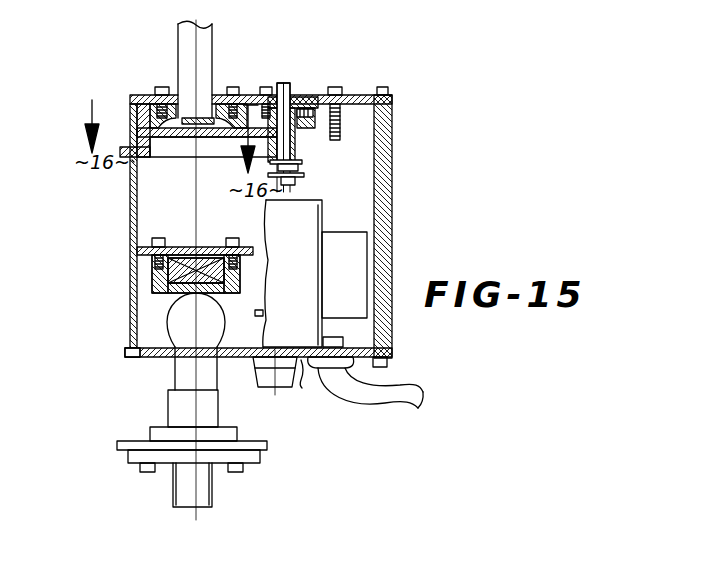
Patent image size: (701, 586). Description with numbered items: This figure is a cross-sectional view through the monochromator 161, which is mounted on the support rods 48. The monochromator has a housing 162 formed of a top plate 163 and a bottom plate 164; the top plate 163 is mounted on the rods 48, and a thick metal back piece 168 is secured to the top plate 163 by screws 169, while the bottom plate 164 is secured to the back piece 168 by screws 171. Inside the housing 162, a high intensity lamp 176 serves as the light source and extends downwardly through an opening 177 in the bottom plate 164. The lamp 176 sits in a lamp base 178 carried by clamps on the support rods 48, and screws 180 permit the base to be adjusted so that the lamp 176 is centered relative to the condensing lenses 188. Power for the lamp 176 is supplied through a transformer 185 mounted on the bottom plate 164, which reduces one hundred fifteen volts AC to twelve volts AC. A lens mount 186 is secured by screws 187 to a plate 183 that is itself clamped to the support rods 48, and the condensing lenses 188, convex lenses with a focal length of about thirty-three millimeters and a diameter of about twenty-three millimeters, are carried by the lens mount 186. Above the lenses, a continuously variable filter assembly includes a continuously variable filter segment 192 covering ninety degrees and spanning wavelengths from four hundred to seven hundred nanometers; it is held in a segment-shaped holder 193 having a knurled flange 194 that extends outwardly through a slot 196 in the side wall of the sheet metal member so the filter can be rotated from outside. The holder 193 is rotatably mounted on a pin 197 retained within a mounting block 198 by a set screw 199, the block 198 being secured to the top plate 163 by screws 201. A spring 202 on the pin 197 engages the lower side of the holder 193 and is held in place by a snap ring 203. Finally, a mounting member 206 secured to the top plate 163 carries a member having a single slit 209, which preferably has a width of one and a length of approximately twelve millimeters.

The support rods 48 is at (214, 52).
The monochromator 161 is at (410, 158).
The housing 162 is at (128, 223).
The top plate 163 is at (348, 96).
The bottom plate 164 is at (289, 308).
The back piece 168 is at (393, 131).
The screws 169 is at (389, 92).
The screws 171 is at (387, 367).
The high intensity lamp 176 is at (172, 327).
The opening 177 is at (158, 357).
The lamp base 178 is at (162, 437).
The screws 180 is at (150, 473).
The plate 183 is at (264, 232).
The transformer 185 is at (356, 276).
The lens mount 186 is at (155, 278).
The screws 187 is at (160, 240).
The condensing lenses 188 is at (203, 248).
The continuously variable filter segment 192 is at (212, 148).
The holder 193 is at (134, 100).
The knurled flange 194 is at (92, 128).
The slot 196 is at (131, 164).
The pin 197 is at (287, 83).
The mounting block 198 is at (313, 128).
The set screw 199 is at (300, 104).
The screws 201 is at (238, 87).
The spring 202 is at (300, 168).
The snap ring 203 is at (294, 182).
The mounting member 206 is at (186, 112).
The slit 209 is at (147, 128).